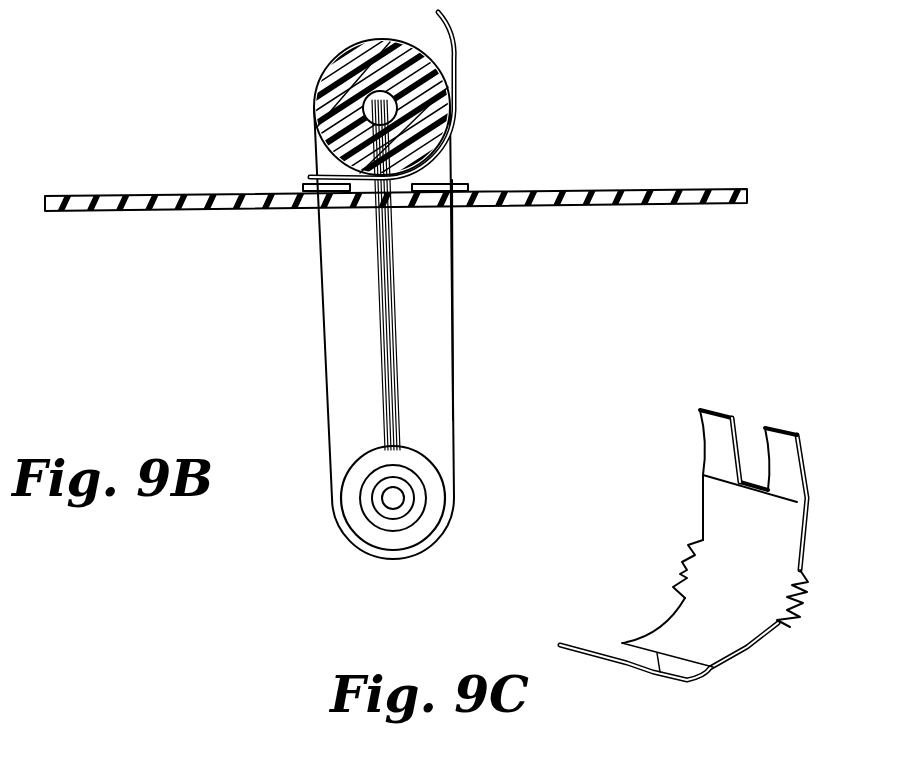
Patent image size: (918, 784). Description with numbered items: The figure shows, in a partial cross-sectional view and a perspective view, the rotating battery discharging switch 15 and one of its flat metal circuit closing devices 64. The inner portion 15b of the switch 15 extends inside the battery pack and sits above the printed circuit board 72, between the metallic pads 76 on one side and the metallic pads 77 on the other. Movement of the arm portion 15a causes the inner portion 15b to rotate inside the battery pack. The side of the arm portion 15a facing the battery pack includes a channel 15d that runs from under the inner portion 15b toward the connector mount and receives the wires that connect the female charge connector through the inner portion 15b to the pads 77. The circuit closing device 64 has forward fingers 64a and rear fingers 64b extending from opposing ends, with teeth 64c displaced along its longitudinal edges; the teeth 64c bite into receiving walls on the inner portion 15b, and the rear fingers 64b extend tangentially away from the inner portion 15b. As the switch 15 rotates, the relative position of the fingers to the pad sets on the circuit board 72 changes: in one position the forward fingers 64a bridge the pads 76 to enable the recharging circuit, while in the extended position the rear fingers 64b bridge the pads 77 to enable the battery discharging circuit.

In FIG. 9B, the rotating battery discharging switch 15 is at (500, 343).
In FIG. 9B, the arm portion 15a is at (446, 323).
In FIG. 9B, the inner portion 15b is at (282, 88).
In FIG. 9B, the channel 15d is at (382, 345).
In FIG. 9B, the circuit closing device 64 is at (457, 50).
In FIG. 9C, the circuit closing device 64 is at (698, 515).
In FIG. 9C, the forward fingers 64a is at (770, 430).
In FIG. 9C, the rear fingers 64b is at (588, 657).
In FIG. 9C, the teeth 64c is at (678, 572).
In FIG. 9B, the printed circuit board 72 is at (137, 211).
In FIG. 9B, the metallic pads 76 is at (461, 183).
In FIG. 9B, the metallic pads 77 is at (303, 183).